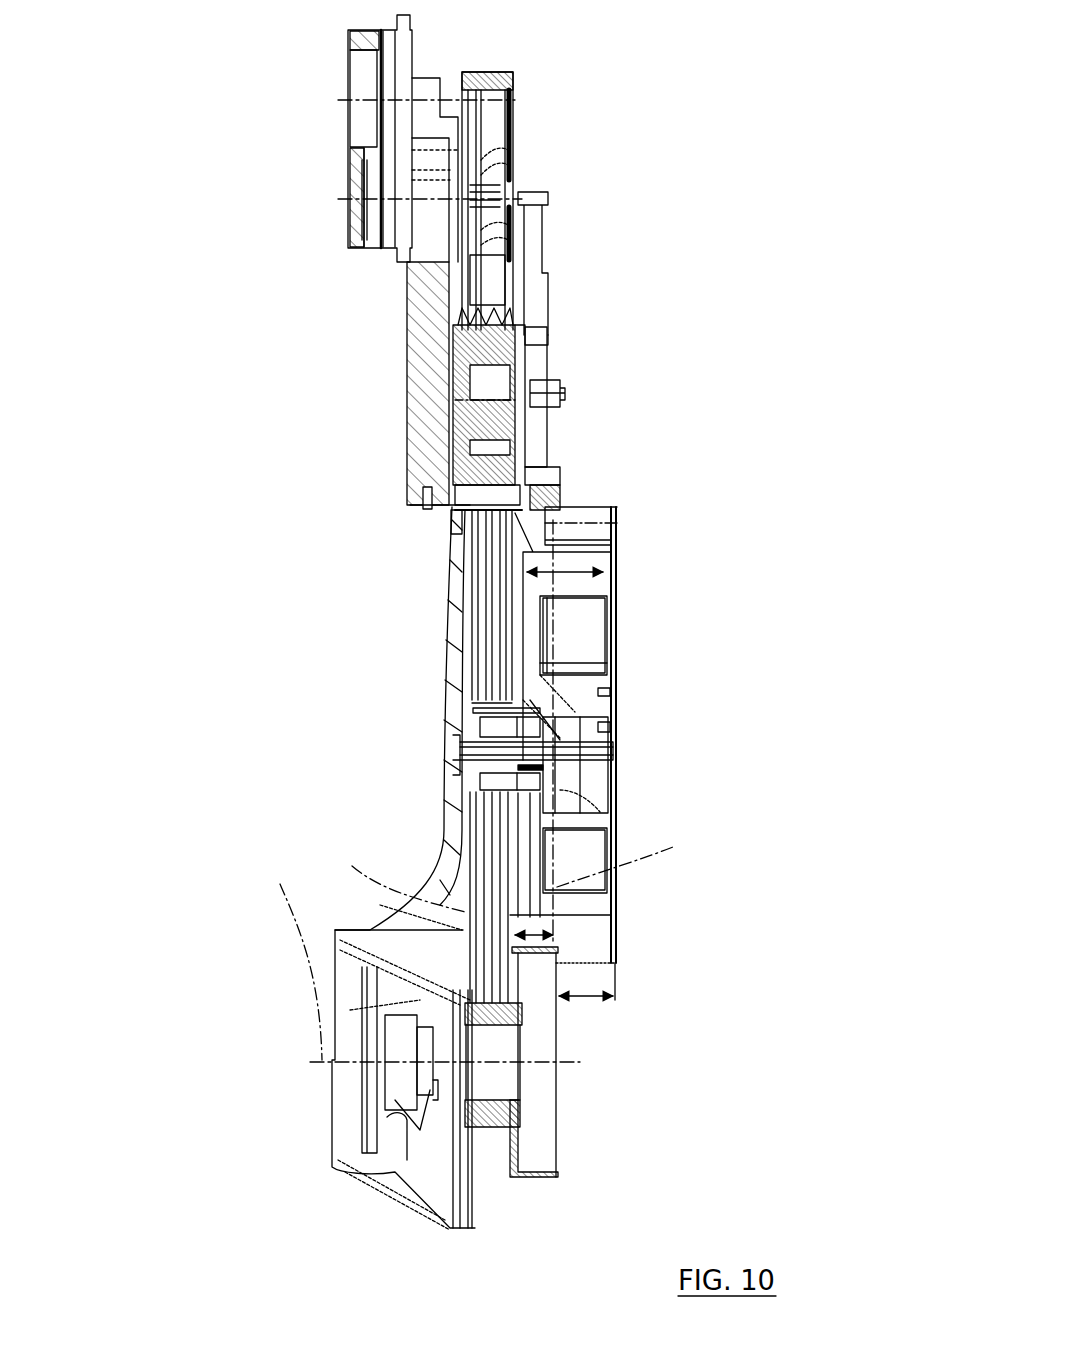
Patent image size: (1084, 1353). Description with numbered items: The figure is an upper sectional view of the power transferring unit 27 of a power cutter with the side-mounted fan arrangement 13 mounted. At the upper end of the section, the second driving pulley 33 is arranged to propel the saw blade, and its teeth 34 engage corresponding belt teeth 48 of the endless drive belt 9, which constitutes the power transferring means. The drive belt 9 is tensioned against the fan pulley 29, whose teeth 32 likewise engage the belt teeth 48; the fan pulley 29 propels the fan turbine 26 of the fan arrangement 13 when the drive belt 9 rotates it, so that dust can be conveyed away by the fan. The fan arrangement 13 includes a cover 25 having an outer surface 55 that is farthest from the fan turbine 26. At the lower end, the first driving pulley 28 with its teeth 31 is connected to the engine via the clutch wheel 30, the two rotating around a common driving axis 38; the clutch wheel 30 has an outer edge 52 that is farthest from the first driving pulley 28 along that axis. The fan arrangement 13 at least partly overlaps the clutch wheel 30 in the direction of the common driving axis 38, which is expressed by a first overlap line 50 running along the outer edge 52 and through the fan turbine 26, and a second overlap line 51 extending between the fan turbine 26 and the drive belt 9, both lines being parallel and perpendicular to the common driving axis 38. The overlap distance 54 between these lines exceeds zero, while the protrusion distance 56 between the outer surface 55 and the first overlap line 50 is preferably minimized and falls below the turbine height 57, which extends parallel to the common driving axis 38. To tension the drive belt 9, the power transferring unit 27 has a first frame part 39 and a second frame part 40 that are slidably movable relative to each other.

The drive belt 9 is at (476, 531).
The fan arrangement 13 is at (626, 543).
The cover 25 is at (613, 625).
The fan turbine 26 is at (577, 857).
The power transferring unit 27 is at (404, 716).
The first driving pulley 28 is at (520, 1072).
The fan pulley 29 is at (482, 798).
The clutch wheel 30 is at (538, 1115).
The teeth 31 is at (487, 1135).
The teeth 32 is at (479, 694).
The second driving pulley 33 is at (505, 126).
The teeth 34 is at (489, 64).
The common driving axis 38 is at (364, 1036).
The first frame part 39 is at (447, 817).
The second frame part 40 is at (428, 383).
The belt teeth 48 is at (500, 563).
The first overlap line 50 is at (638, 859).
The second overlap line 51 is at (398, 880).
The outer edge 52 is at (562, 1140).
The overlap distance 54 is at (535, 935).
The outer surface 55 is at (619, 737).
The protrusion distance 56 is at (588, 995).
The turbine height 57 is at (575, 560).